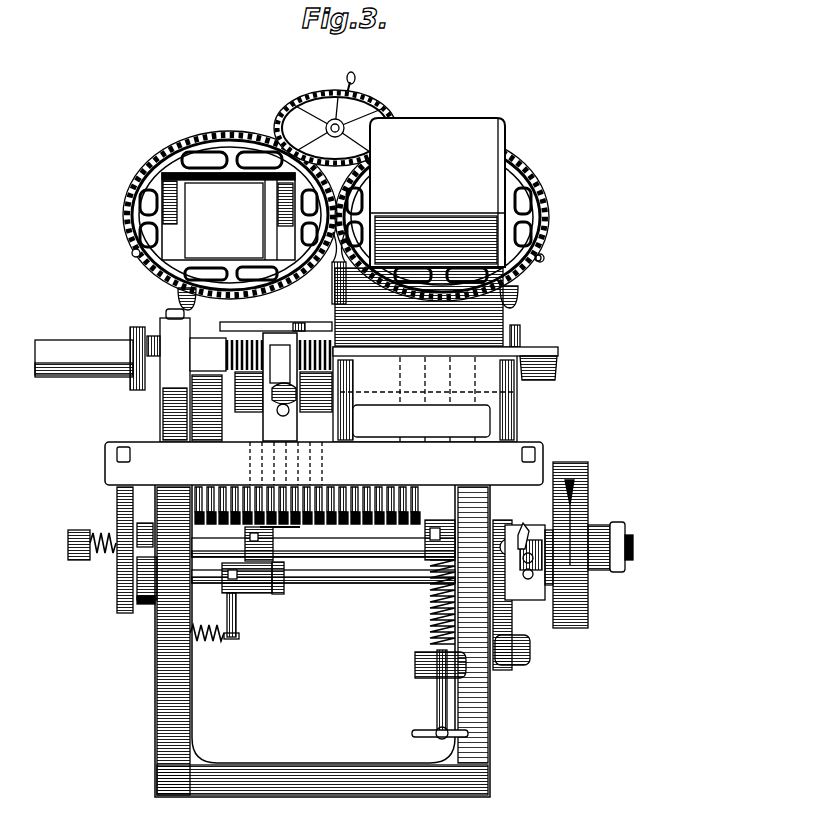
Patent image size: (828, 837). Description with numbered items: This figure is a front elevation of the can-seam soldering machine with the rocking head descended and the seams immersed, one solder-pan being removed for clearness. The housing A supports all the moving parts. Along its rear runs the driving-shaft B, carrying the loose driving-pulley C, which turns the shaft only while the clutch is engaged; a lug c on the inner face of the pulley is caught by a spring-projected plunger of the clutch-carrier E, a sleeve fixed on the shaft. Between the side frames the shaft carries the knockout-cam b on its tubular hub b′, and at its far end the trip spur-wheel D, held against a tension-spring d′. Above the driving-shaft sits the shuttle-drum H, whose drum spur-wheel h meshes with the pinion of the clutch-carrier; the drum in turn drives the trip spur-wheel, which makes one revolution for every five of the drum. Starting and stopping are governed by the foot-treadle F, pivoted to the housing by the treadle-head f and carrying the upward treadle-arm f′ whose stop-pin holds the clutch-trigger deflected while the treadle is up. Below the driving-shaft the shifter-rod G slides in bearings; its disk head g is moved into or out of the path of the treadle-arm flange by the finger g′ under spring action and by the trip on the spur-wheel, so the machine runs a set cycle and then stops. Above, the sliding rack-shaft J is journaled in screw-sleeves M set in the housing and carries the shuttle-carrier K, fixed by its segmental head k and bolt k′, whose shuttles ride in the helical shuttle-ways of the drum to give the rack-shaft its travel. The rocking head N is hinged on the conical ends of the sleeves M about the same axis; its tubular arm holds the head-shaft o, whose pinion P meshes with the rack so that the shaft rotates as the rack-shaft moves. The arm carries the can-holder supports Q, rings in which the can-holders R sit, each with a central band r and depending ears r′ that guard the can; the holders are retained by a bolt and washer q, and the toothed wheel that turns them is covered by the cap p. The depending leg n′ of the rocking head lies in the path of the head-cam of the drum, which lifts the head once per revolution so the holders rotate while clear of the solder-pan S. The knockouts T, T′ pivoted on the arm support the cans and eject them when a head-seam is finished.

The housing A is at (322, 641).
The driving-shaft B is at (380, 542).
The driving-pulley C is at (593, 545).
The trip spur-wheel D is at (115, 580).
The clutch-carrier E is at (538, 580).
The foot-treadle F is at (432, 716).
The shifter-rod G is at (372, 580).
The shuttle-drum H is at (307, 505).
The sliding rack-shaft J is at (90, 358).
The shuttle-carrier K is at (280, 387).
The screw-sleeves M is at (152, 342).
The rocking head N is at (276, 316).
The pinion P is at (352, 300).
The can-holder supports Q is at (213, 147).
The can-holder R is at (160, 171).
The solder-pan and furnace S is at (445, 416).
The knockouts T is at (228, 215).
The knockout T′ is at (268, 236).
The knockout-cam b is at (255, 544).
The tubular hub b′ is at (272, 532).
The lug c is at (549, 530).
The tension-spring d′ is at (96, 532).
The treadle-head f is at (504, 665).
The treadle-arm f′ is at (502, 595).
The disk-shaped head g is at (526, 580).
The finger g′ is at (237, 624).
The drum spur-wheel h is at (430, 526).
The segmental head k is at (270, 336).
The bolt k′ is at (299, 318).
The depending leg n′ is at (162, 402).
The head-shaft o is at (175, 375).
The cap p is at (302, 158).
The bolt and washer q is at (552, 263).
The central band r is at (160, 239).
The angular ears r′ is at (176, 215).